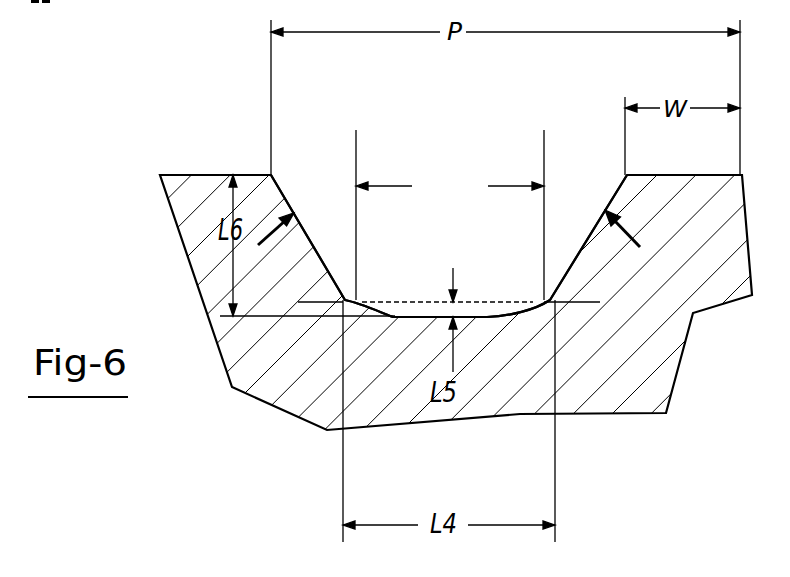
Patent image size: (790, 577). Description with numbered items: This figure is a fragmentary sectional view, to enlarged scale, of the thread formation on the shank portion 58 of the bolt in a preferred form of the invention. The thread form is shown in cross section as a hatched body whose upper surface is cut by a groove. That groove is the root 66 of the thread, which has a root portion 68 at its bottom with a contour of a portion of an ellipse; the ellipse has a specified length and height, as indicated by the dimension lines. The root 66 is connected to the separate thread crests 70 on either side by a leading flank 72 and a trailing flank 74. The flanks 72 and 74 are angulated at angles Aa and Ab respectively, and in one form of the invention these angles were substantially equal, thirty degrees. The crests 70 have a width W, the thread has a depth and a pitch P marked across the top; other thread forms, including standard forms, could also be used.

The shank portion 58 is at (186, 221).
The root 66 is at (432, 142).
The root portion 68 is at (420, 310).
The thread crests 70 is at (191, 175).
The leading flank 72 is at (616, 192).
The trailing flank 74 is at (280, 185).